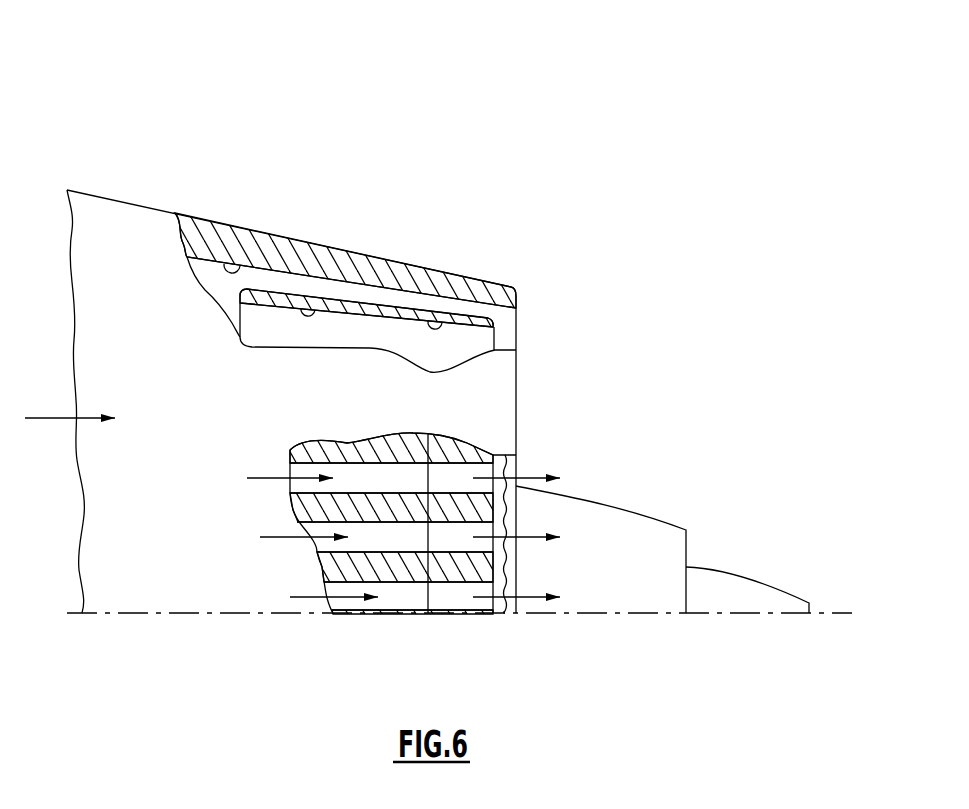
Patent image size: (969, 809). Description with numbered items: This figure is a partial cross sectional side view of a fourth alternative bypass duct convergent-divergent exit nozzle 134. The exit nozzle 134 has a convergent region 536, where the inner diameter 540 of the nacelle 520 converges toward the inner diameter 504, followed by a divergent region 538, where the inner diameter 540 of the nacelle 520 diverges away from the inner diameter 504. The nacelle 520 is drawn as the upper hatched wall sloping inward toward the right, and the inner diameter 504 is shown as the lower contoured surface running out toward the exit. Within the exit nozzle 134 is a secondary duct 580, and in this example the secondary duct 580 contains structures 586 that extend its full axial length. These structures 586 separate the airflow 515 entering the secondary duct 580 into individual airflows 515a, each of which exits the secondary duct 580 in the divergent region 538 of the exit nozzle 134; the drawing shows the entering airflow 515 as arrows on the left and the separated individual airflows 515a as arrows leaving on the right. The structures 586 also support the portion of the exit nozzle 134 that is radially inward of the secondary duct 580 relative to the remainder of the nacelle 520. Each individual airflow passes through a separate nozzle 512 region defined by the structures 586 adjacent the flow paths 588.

The convergent-divergent exit nozzle 134 is at (265, 82).
The nacelle 520 is at (100, 197).
The inner diameter of the nacelle 540 is at (248, 267).
The convergent region 536 is at (318, 300).
The secondary duct 580 is at (360, 292).
The divergent region 538 is at (447, 330).
The airflow 515 is at (232, 282).
The nozzle region 512 is at (460, 566).
The structures 586 is at (452, 503).
The flow paths 588 is at (506, 544).
The inner diameter 504 is at (508, 480).
The individual airflows 515a is at (547, 539).